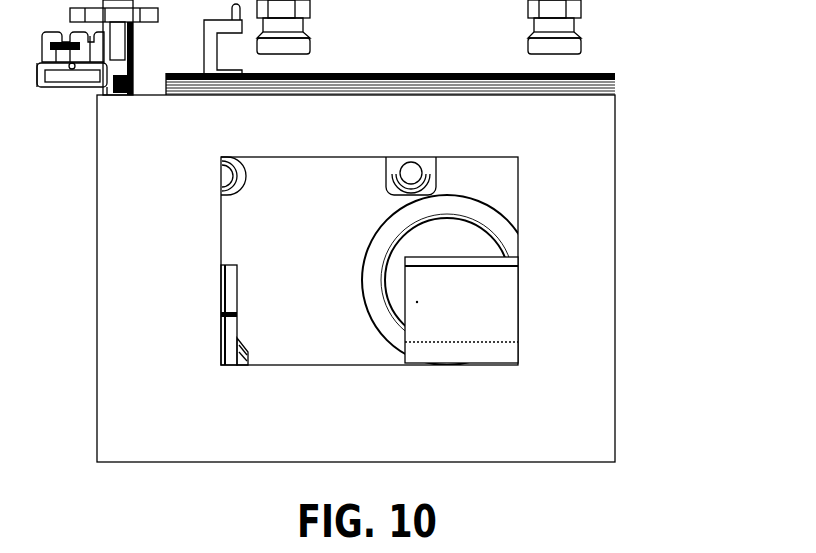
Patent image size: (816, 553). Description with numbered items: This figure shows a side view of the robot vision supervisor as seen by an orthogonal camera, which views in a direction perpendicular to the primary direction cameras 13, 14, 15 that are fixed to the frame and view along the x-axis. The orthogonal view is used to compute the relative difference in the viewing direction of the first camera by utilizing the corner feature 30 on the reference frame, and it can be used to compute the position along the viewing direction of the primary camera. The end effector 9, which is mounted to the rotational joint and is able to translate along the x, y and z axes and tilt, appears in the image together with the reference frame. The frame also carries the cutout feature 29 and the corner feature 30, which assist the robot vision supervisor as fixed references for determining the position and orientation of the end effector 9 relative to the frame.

The end effector 9 is at (228, 292).
The primary direction camera 13 is at (250, 348).
The primary direction camera 14 is at (437, 168).
The primary direction camera 15 is at (240, 175).
The cutout feature 29 is at (357, 367).
The corner feature 30 is at (220, 360).